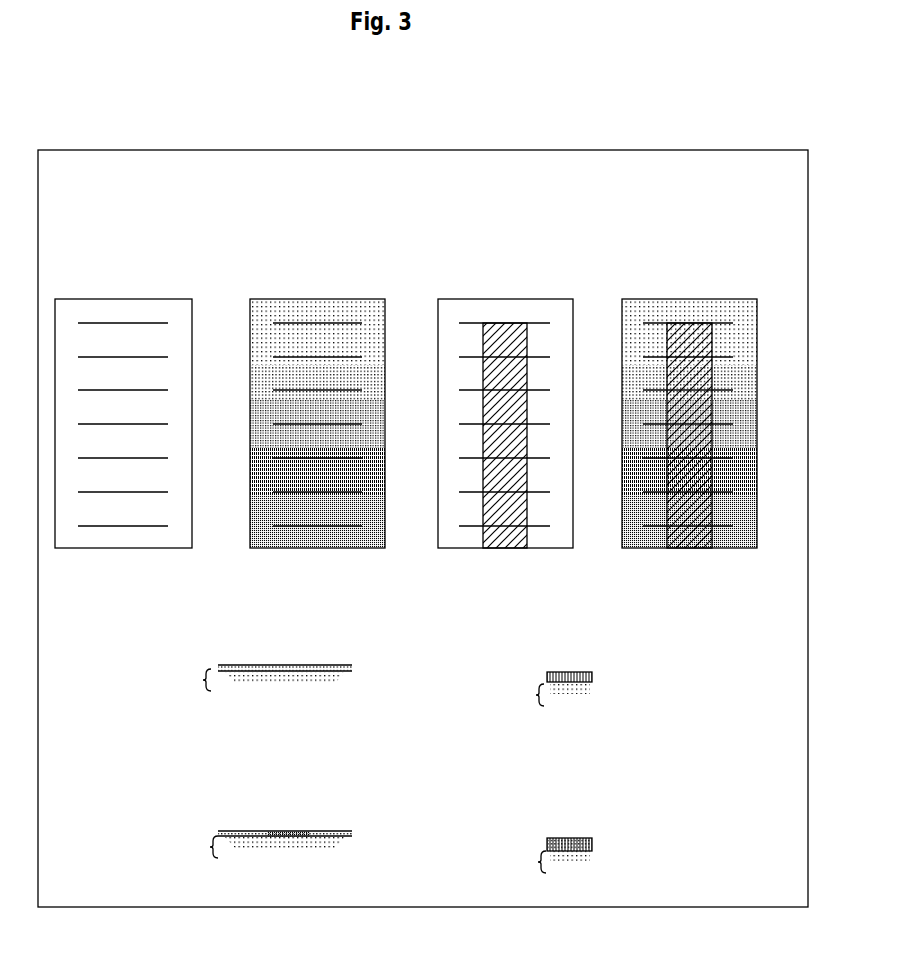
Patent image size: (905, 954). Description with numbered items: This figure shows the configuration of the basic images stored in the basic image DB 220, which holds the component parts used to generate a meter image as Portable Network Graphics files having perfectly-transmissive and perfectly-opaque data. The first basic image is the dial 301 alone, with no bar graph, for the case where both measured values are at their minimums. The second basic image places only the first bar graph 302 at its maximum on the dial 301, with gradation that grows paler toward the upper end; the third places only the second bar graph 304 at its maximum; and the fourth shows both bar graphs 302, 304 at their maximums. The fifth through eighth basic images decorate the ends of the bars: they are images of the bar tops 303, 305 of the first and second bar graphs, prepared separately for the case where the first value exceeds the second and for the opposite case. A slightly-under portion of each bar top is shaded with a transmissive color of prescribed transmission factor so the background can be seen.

The basic image DB 220 is at (348, 157).
The dial 301 is at (186, 342).
The first bar graph 302 is at (380, 433).
The bar top of the first bar graph 303 is at (352, 664).
The second bar graph 304 is at (524, 443).
The bar top of the second bar graph 305 is at (593, 681).